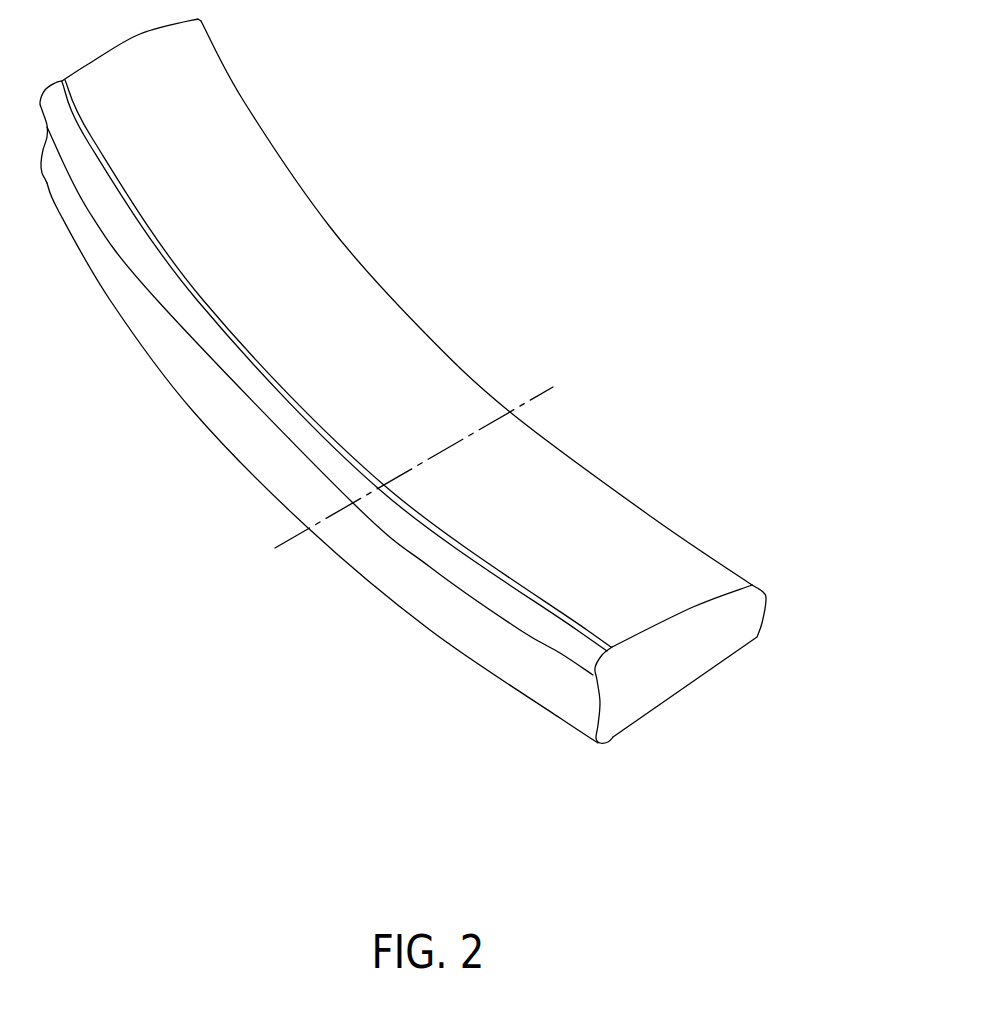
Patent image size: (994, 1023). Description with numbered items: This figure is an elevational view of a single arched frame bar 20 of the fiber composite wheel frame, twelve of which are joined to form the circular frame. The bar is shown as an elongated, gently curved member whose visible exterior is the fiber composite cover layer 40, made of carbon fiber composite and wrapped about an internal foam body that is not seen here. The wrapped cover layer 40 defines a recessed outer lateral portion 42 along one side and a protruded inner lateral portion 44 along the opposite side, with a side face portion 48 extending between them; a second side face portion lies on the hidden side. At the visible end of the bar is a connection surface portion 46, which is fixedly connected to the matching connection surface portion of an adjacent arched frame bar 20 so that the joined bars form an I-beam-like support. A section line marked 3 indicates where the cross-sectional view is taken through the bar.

The arched frame bar 20 is at (403, 418).
The fiber composite cover layer 40 is at (403, 418).
The recessed outer lateral portion 42 is at (192, 412).
The protruded inner lateral portion 44 is at (653, 518).
The connection surface portion 46 is at (680, 662).
The side face portion 48 is at (257, 218).
The section line 3- 3 is at (553, 418).